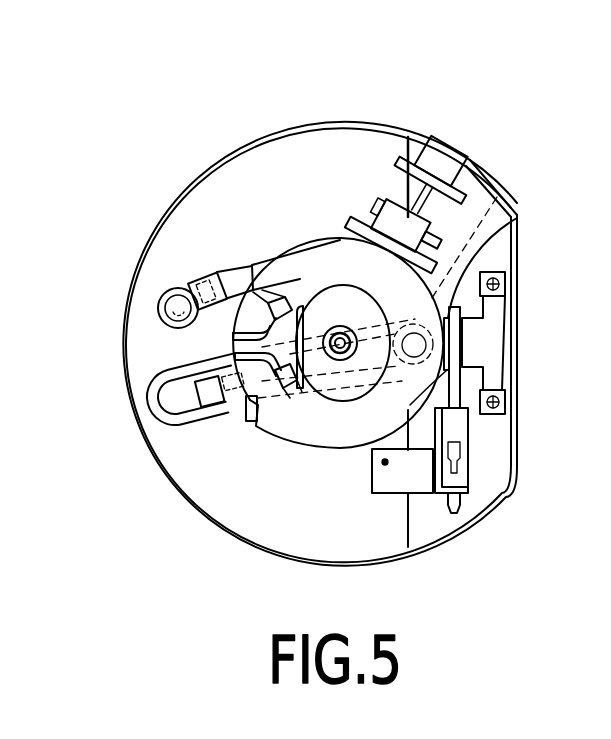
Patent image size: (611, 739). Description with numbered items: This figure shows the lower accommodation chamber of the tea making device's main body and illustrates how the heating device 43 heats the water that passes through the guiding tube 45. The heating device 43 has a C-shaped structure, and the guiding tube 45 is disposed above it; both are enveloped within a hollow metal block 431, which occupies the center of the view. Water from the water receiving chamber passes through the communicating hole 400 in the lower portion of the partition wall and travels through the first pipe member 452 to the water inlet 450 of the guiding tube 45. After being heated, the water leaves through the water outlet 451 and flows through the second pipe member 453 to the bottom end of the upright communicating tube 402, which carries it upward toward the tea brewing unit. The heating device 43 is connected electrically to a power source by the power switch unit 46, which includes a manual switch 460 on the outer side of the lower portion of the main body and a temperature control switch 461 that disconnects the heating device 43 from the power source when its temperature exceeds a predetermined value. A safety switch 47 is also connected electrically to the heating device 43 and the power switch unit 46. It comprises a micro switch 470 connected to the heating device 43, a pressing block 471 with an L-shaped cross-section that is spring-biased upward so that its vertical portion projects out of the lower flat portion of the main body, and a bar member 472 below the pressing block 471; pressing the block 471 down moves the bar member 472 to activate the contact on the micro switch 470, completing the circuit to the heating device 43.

The communicating hole 400 is at (142, 293).
The communicating tube 402 is at (497, 203).
The heating device 43 is at (232, 275).
The hollow metal block 431 is at (330, 297).
The guiding tube 45 is at (242, 415).
The water inlet 450 is at (217, 273).
The water outlet 451 is at (228, 413).
The first pipe member 452 is at (193, 280).
The second pipe member 453 is at (150, 395).
The power switch unit 46 is at (447, 135).
The manual switch 460 is at (450, 167).
The temperature control switch 461 is at (390, 215).
The safety switch 47 is at (500, 320).
The micro switch 470 is at (463, 440).
The pressing block 471 is at (487, 337).
The bar member 472 is at (448, 352).